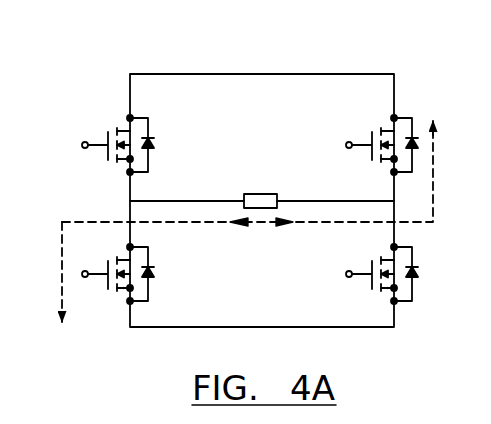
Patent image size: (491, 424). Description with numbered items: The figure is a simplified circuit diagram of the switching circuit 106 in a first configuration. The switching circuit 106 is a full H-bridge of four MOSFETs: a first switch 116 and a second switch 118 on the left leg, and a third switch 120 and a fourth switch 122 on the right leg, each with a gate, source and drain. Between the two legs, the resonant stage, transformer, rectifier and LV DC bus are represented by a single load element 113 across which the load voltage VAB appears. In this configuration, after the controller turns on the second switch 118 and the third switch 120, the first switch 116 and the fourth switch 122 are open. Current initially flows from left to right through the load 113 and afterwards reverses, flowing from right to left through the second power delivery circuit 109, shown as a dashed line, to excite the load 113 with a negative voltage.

The switching circuit 106 is at (80, 72).
The second power delivery circuit 109 is at (437, 187).
The load element 113 is at (284, 145).
The first switch 116 is at (88, 128).
The second switch 118 is at (88, 260).
The third switch 120 is at (418, 102).
The fourth switch 122 is at (417, 311).